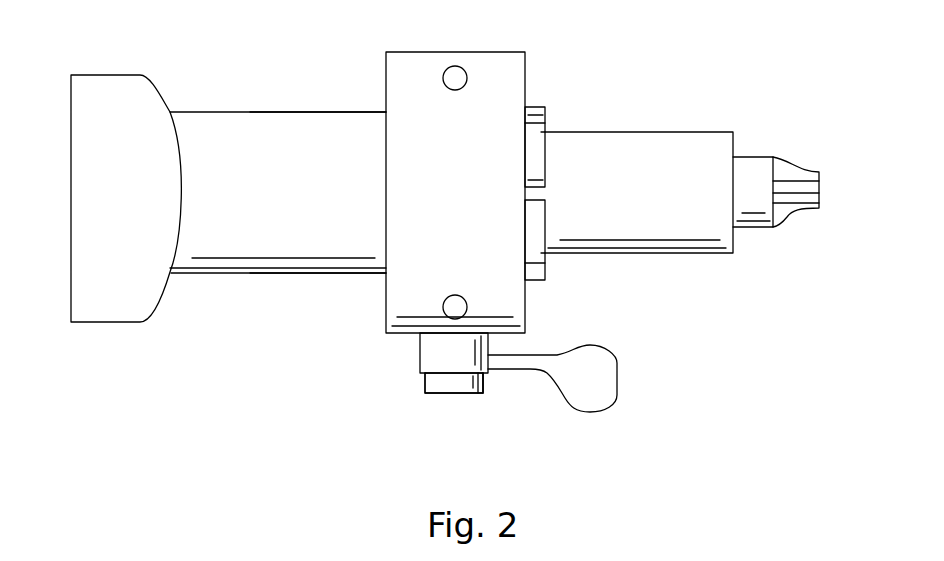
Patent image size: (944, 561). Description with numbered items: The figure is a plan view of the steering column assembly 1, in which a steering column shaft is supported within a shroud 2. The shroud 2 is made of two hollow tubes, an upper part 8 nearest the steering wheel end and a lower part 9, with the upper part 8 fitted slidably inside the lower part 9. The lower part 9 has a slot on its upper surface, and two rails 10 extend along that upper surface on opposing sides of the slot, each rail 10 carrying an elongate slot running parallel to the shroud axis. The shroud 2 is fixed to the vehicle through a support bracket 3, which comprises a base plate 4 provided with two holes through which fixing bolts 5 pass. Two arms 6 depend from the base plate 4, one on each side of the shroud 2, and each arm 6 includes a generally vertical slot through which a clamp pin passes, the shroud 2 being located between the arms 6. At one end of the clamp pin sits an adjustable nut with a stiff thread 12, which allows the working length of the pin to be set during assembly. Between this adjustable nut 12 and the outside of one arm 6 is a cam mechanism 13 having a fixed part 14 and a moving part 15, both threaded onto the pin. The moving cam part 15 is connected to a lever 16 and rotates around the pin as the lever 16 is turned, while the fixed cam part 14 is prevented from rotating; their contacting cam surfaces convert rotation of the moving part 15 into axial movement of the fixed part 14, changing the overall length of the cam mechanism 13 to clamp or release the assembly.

The steering column assembly 1 is at (230, 278).
The shroud 2 is at (313, 285).
The support bracket 3 is at (528, 73).
The base plate 4 is at (398, 295).
The fixing bolts 5 is at (455, 78).
The arms 6 is at (535, 118).
The upper part 8 is at (750, 170).
The lower part 9 is at (263, 135).
The rails 10 is at (541, 157).
The second reaction member 12 is at (477, 387).
The cam mechanism 13 is at (418, 379).
The fixed cam part 14 is at (435, 338).
The moving cam part 15 is at (442, 365).
The lever 16 is at (595, 398).